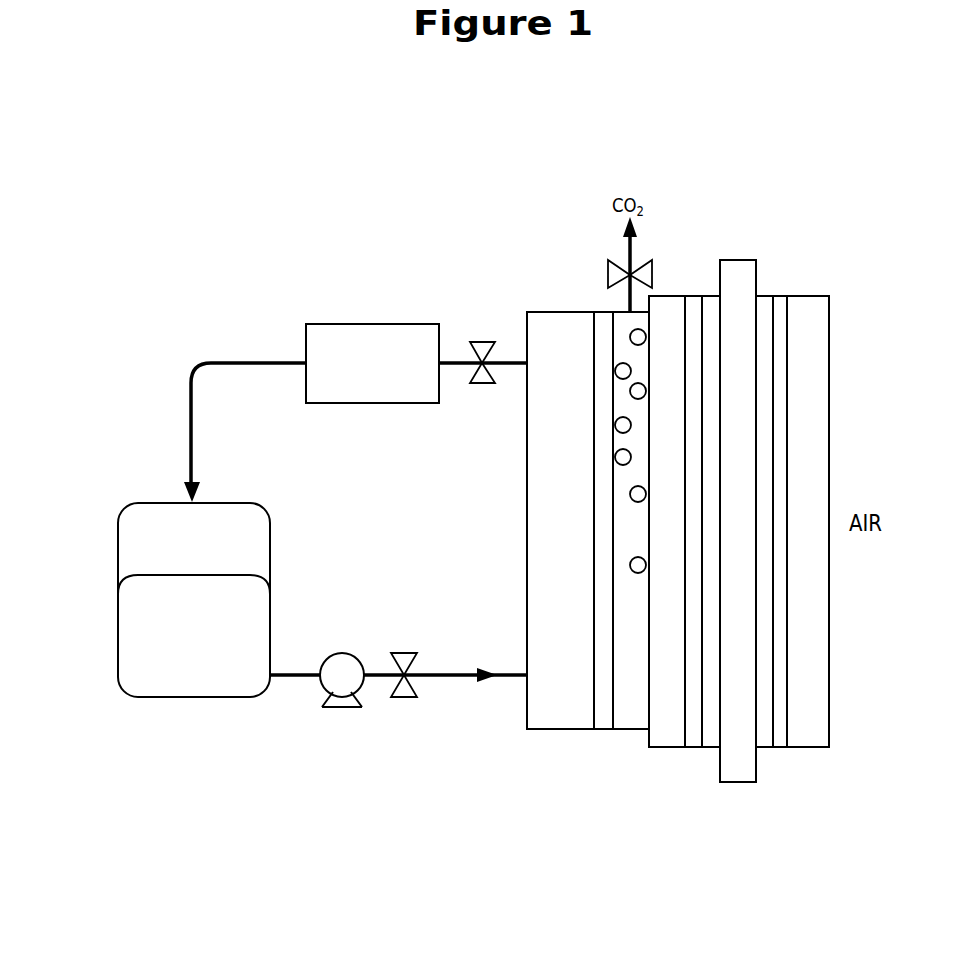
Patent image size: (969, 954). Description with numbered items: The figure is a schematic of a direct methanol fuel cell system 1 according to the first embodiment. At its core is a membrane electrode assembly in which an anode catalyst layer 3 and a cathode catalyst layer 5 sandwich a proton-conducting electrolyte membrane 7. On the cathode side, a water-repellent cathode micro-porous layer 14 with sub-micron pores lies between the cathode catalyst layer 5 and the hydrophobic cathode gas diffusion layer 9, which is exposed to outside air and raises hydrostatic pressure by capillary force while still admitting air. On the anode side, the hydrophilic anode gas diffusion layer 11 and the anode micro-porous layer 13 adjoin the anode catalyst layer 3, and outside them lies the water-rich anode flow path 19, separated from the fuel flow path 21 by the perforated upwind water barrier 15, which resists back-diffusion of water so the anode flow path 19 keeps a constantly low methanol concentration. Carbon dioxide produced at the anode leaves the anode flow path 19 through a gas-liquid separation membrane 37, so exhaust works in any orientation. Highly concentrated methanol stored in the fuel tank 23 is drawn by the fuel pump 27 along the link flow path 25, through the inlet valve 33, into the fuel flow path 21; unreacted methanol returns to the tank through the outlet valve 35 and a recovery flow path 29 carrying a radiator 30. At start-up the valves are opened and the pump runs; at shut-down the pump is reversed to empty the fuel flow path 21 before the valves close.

The fuel cell system 1 is at (793, 162).
The anode catalyst layer 3 is at (712, 307).
The cathode catalyst layer 5 is at (767, 305).
The electrolyte membrane 7 is at (740, 275).
The cathode gas diffusion layer 9 is at (807, 734).
The anode gas diffusion layer 11 is at (670, 733).
The anode micro-porous layer 13 is at (693, 742).
The cathode micro-porous layer 14 is at (782, 307).
The water barrier 15 is at (605, 722).
The anode flow path 19 is at (620, 323).
The fuel flow path 21 is at (527, 458).
The fuel tank 23 is at (132, 538).
The link flow path 25 is at (438, 670).
The fuel pump 27 is at (355, 652).
The recovery flow path 29 is at (223, 360).
The radiator 30 is at (393, 322).
The inlet valve 33 is at (399, 698).
The outlet valve 35 is at (479, 327).
The gas-liquid separation membrane 37 is at (652, 277).